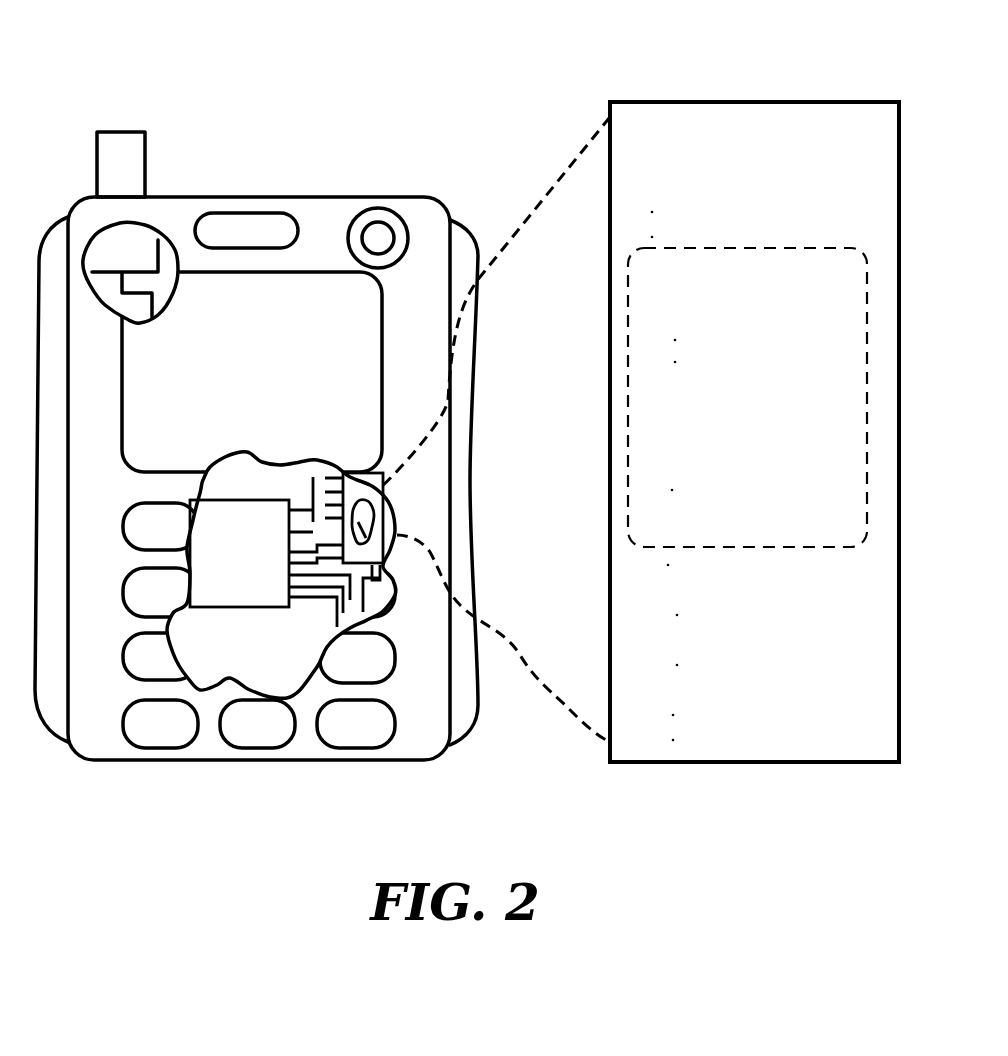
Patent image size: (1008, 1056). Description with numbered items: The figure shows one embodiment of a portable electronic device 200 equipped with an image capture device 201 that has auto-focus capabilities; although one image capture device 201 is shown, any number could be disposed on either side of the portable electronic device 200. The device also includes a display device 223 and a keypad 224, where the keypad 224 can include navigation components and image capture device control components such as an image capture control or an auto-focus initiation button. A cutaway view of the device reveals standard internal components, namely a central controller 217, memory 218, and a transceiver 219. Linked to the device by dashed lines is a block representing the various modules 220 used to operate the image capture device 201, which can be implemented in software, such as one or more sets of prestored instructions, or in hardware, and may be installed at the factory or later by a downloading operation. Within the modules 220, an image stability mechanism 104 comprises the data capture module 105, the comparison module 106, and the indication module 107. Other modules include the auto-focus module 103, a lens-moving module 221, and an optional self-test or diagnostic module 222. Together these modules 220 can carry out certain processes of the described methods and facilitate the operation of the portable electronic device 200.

The portable electronic device 200 is at (288, 124).
The image capture device 201 is at (378, 237).
The transceiver 219 is at (128, 253).
The display device 223 is at (308, 293).
The central controller 217 is at (237, 537).
The memory 218 is at (353, 492).
The keypad 224 is at (250, 730).
The modules 220 is at (735, 100).
The image stability mechanism 104 is at (728, 247).
The data capture module 105 is at (643, 260).
The comparison module 106 is at (643, 385).
The indication module 107 is at (643, 510).
The auto-focus module 103 is at (643, 585).
The lens-moving module 221 is at (822, 648).
The self-test module 222 is at (712, 700).